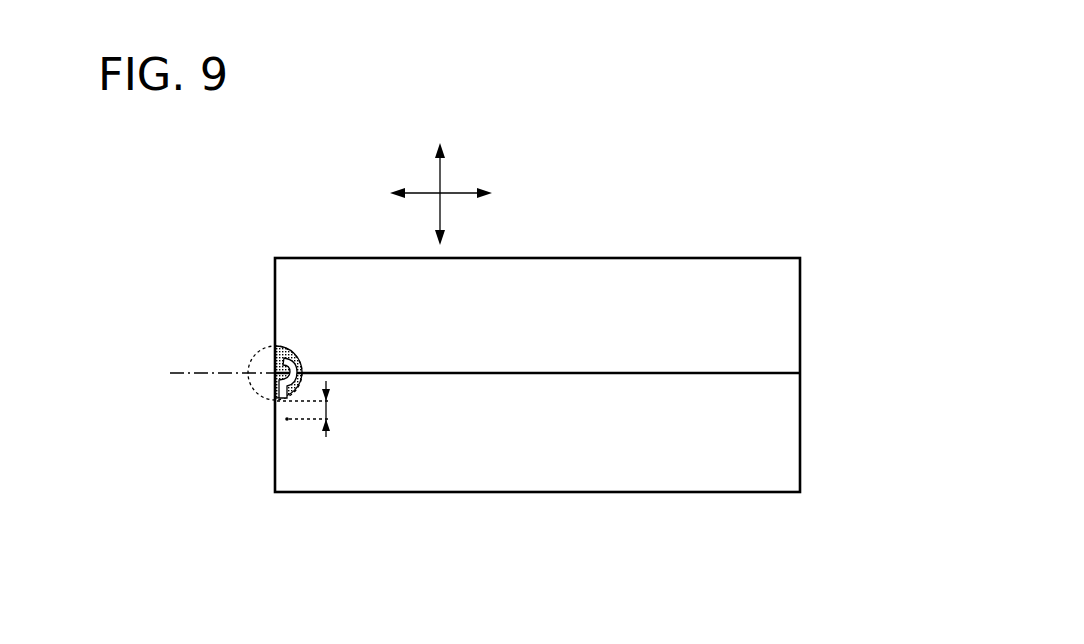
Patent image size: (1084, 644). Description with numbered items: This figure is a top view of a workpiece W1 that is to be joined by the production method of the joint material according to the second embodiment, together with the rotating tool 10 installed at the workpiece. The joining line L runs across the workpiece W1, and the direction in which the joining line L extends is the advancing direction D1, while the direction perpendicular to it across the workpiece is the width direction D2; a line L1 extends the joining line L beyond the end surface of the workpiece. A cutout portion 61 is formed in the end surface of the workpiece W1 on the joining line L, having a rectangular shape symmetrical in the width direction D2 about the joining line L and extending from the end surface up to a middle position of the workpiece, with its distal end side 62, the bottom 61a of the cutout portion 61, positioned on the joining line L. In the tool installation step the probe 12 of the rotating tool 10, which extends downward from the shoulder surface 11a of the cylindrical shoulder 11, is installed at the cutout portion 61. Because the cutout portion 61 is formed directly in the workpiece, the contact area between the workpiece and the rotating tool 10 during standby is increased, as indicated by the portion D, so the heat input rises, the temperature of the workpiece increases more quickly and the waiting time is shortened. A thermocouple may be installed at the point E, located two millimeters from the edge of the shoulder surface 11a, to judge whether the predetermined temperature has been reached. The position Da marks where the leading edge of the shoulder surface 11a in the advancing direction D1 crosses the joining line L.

The rotating tool 10 is at (382, 166).
The shoulder 11 is at (283, 350).
The shoulder surface 11a is at (349, 183).
The probe 12 is at (262, 364).
The cutout portion 61 is at (278, 386).
The bottom of the cutout portion 61a is at (286, 358).
The distal end side of the cutout portion 62 is at (270, 372).
The portion D is at (298, 346).
The position Da is at (301, 368).
The point E is at (286, 419).
The joining line L is at (768, 373).
The extension line of processing line L1 is at (190, 370).
The advancing direction D1 is at (452, 192).
The width direction D2 is at (445, 214).
The workpiece W1 is at (680, 258).